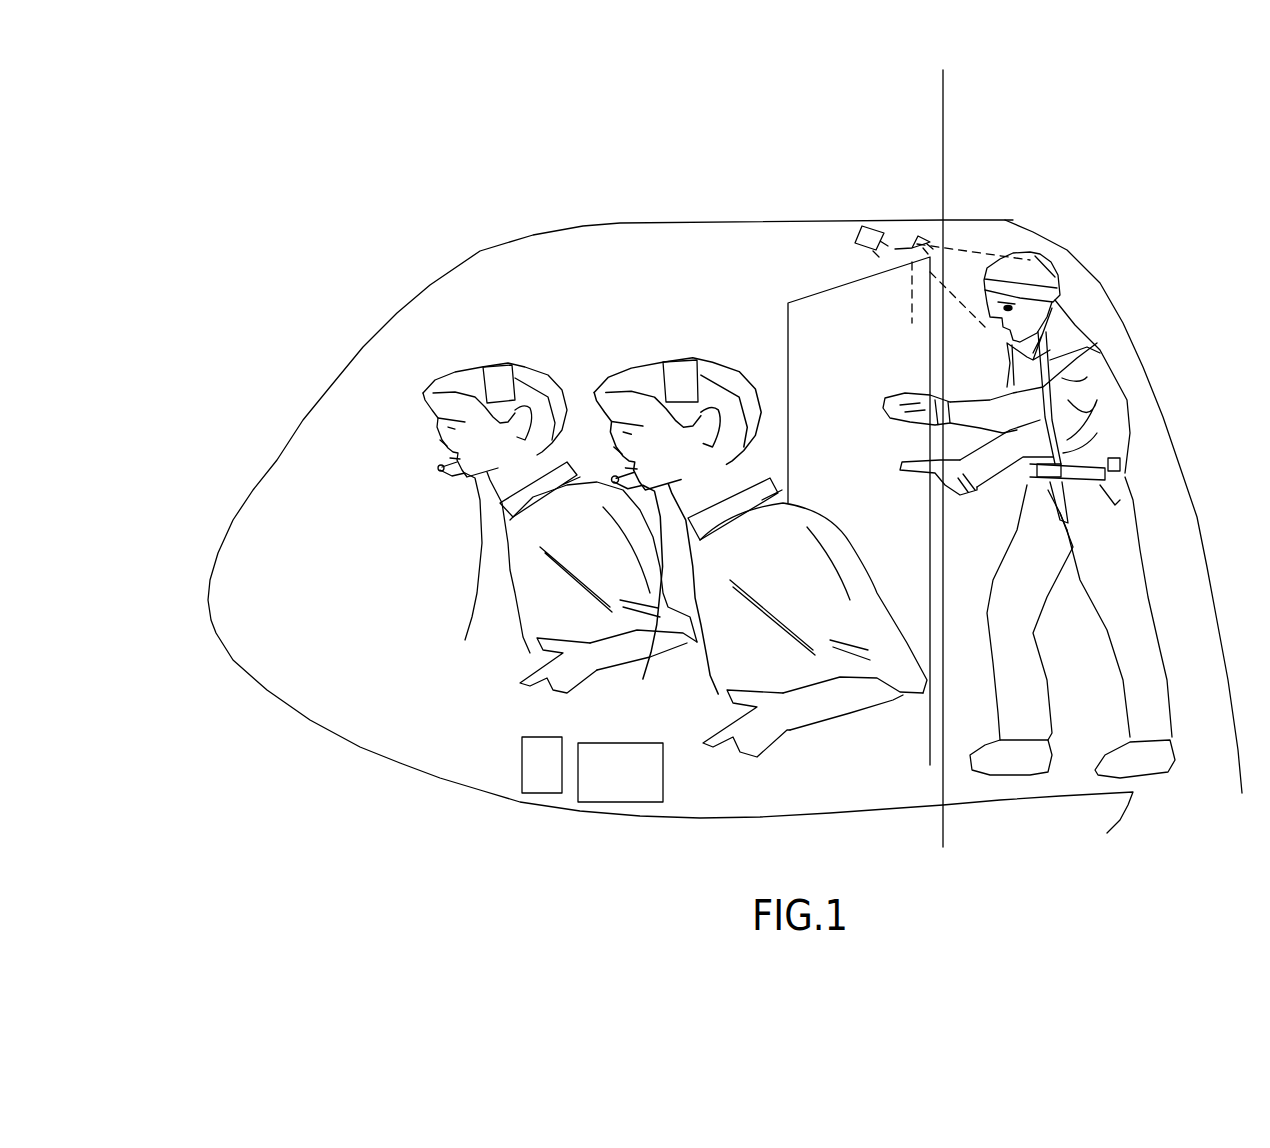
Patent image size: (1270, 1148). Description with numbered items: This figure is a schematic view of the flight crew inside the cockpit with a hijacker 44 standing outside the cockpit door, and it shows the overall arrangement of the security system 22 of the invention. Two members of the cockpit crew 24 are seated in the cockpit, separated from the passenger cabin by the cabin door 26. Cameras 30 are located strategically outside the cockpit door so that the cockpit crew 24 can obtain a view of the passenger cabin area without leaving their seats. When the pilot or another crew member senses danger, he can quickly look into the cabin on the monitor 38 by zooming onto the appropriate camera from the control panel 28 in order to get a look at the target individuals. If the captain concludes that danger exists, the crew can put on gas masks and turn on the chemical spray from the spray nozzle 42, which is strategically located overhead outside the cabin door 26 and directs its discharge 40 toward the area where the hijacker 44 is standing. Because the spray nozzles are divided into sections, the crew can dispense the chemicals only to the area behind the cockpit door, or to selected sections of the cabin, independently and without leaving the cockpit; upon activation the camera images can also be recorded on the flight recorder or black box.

The aircraft cabin 22 is at (622, 200).
The cockpit crew 24 is at (522, 375).
The cabin door 26 is at (810, 295).
The control panel 28 is at (541, 783).
The cameras 30 is at (860, 238).
The monitor 38 is at (592, 787).
The line of sight 40 is at (968, 248).
The spray nozzle 42 is at (911, 235).
The flight attendant 44 is at (1087, 340).